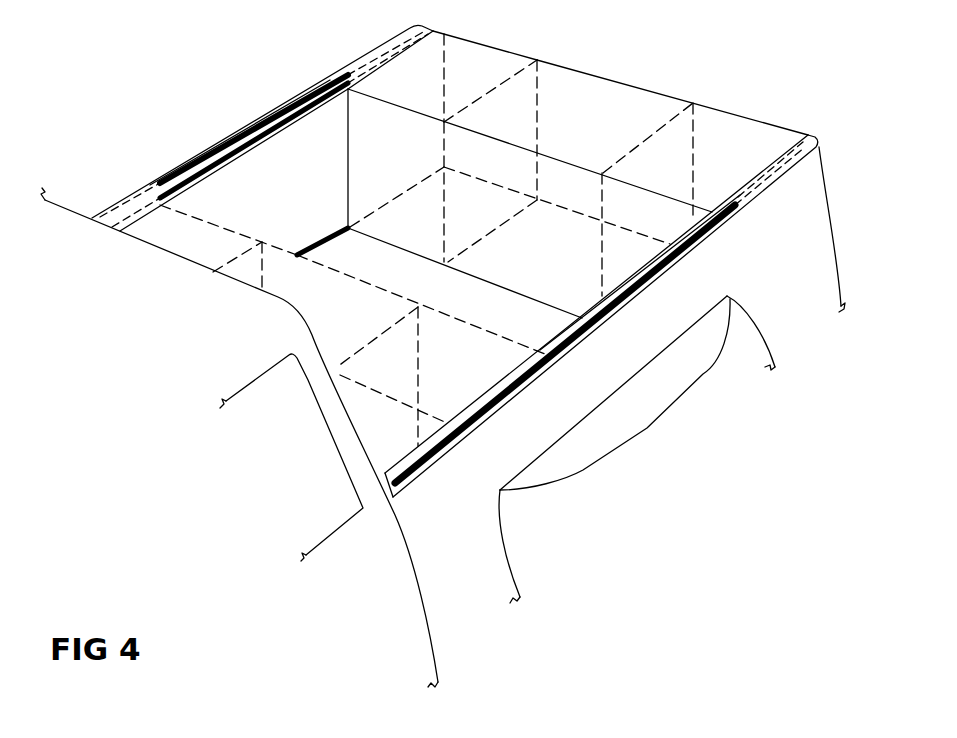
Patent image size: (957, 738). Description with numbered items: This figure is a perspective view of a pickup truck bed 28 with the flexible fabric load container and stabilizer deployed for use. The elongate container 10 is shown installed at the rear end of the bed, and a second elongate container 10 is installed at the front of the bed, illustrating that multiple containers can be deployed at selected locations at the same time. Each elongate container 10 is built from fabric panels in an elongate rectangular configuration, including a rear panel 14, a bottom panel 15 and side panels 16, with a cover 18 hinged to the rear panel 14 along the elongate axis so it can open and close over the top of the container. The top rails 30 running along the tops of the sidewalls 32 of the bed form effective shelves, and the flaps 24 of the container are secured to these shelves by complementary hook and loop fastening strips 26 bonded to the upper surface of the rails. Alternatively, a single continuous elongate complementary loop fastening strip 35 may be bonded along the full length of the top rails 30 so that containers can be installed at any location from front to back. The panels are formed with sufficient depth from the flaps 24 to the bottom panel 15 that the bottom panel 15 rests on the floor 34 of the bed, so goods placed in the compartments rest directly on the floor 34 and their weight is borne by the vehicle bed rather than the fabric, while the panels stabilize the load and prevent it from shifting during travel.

The elongate container 10 is at (152, 228).
The rear panel 14 is at (358, 170).
The bottom panel 15 is at (428, 227).
The side panels 16 is at (395, 97).
The cover 18 is at (558, 131).
The flaps 24 is at (433, 31).
The complementary loop fastening strips 26 is at (389, 42).
The pickup truck bed 28 is at (612, 380).
The top rails 30 is at (263, 133).
The sidewalls 32 is at (233, 195).
The floor 34 is at (417, 286).
The elongate complementary loop fastening strip 35 is at (205, 153).